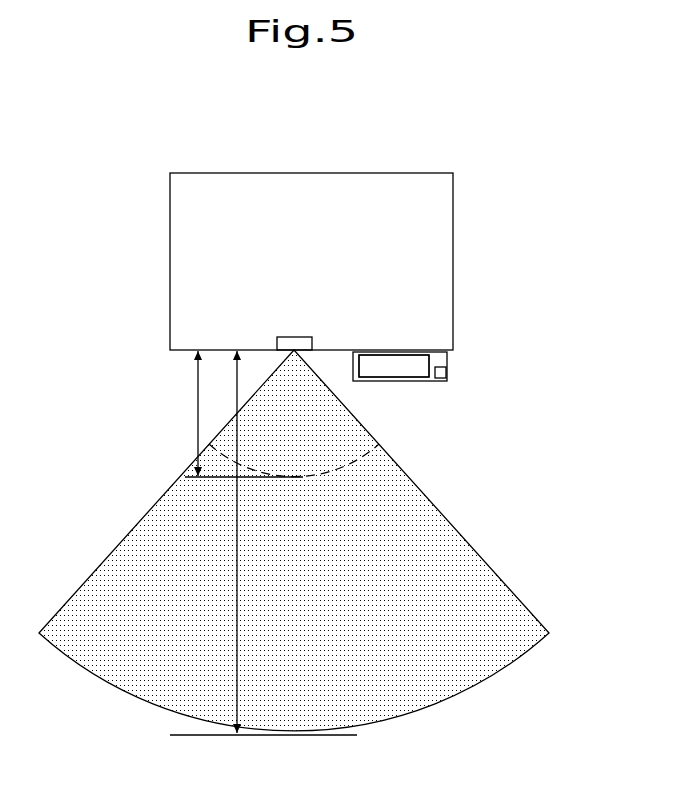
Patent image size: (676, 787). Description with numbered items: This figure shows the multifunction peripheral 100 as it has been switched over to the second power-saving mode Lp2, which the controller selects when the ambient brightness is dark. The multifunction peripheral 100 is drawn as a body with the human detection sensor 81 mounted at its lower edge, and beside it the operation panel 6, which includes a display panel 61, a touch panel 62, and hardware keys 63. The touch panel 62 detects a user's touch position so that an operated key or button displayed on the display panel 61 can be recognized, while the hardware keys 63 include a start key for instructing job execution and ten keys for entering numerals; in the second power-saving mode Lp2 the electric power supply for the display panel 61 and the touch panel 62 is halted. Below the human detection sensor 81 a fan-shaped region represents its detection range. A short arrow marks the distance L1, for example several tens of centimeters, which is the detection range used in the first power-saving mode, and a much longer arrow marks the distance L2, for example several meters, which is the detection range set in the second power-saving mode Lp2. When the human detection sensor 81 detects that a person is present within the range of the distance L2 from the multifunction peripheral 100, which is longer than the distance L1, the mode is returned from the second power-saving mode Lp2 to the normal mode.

The multifunction peripheral 100 is at (438, 228).
The human detection sensor 81 is at (288, 342).
The operation panel 6 is at (447, 358).
The display panel 61 is at (393, 372).
The touch panel 62 is at (394, 366).
The hardware keys 63 is at (446, 371).
The second power-saving mode Lp2 is at (492, 306).
The short distance L1 is at (230, 414).
The distance L2 is at (263, 543).